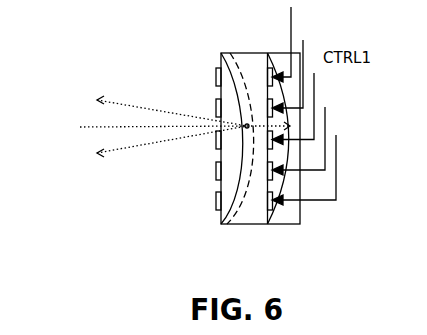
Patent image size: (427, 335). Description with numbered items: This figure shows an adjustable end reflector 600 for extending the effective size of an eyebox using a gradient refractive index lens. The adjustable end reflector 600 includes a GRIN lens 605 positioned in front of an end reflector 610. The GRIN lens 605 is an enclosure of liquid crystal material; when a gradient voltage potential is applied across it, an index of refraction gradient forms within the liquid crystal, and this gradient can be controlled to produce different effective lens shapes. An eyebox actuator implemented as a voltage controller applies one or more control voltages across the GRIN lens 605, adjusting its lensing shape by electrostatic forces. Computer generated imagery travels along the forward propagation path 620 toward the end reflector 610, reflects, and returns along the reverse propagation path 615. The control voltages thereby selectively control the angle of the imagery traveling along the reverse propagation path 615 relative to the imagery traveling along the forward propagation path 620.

The adjustable end reflector 600 is at (172, 232).
The GRIN lens 605 is at (218, 53).
The end reflector 610 is at (301, 213).
The reverse propagation path 615 is at (148, 108).
The forward propagation path 620 is at (102, 127).